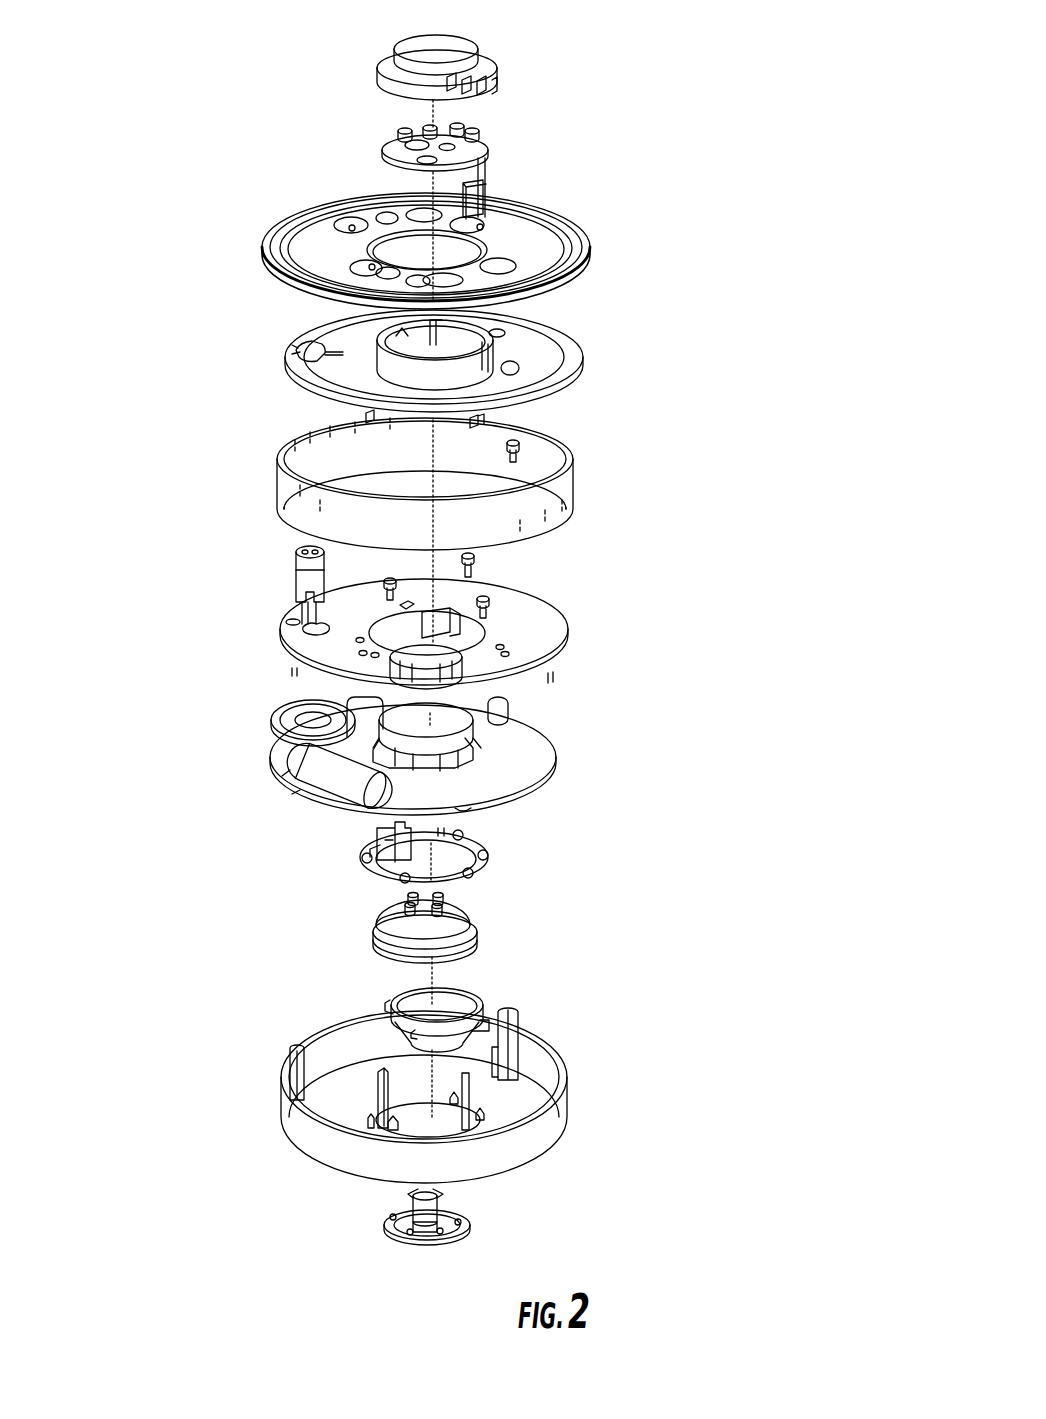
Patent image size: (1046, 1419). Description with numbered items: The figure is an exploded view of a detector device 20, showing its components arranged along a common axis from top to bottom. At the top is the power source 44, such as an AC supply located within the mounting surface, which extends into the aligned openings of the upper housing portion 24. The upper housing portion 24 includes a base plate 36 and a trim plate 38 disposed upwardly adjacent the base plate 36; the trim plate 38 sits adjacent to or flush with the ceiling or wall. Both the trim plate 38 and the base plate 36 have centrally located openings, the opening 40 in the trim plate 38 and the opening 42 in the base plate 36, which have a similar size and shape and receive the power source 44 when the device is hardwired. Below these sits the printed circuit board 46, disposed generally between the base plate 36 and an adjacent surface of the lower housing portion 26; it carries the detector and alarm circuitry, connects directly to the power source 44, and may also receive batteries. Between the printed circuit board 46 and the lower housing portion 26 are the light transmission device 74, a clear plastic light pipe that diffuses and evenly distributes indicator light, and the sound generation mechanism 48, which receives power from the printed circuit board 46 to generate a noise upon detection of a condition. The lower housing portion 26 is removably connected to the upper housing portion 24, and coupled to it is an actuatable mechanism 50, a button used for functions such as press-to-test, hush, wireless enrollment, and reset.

The detector device 20 is at (96, 110).
The upper housing portion 24 is at (784, 317).
The lower housing portion 26 is at (298, 1120).
The base plate 36 is at (327, 257).
The trim plate 38 is at (327, 352).
The opening 40 is at (445, 347).
The opening 42 is at (450, 255).
The power source 44 is at (482, 140).
The printed circuit board 46 is at (512, 753).
The sound generation mechanism 48 is at (443, 1015).
The actuatable mechanism 50 is at (463, 1222).
The light transmission device 74 is at (420, 920).